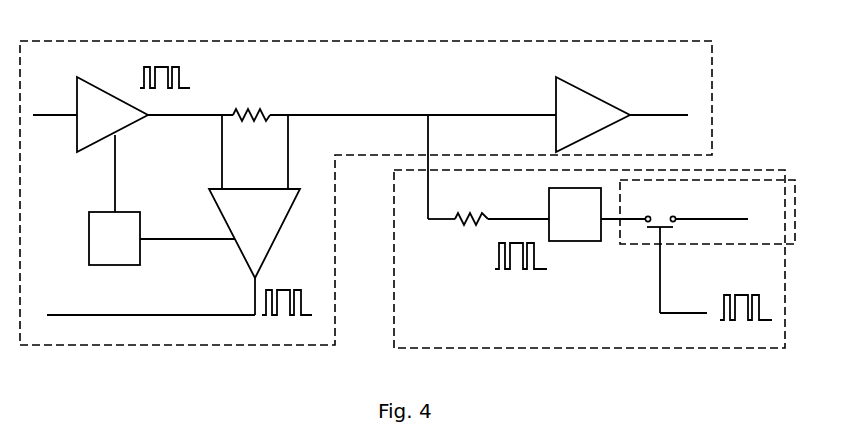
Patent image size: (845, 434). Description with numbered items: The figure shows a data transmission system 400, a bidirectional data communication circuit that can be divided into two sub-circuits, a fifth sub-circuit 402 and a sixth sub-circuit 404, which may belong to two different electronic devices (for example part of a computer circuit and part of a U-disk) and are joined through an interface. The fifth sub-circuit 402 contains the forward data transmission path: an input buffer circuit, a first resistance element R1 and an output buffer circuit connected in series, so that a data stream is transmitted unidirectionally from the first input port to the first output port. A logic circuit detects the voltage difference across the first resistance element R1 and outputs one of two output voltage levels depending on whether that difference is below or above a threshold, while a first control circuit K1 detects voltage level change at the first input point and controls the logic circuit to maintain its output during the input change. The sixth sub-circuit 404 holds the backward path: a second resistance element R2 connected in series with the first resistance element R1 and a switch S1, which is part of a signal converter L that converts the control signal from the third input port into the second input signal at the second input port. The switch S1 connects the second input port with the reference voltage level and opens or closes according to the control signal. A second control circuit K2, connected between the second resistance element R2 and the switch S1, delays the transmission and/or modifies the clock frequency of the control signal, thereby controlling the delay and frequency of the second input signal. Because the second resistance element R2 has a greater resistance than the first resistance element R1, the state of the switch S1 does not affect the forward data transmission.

The data transmission system 400 is at (805, 31).
The fifth sub-circuit 402 is at (693, 66).
The sixth sub-circuit 404 is at (441, 338).
The signal converter L is at (737, 178).
The first control circuit K1 is at (162, 200).
The second control circuit K2 is at (575, 214).
The first resistance element R1 is at (251, 103).
The second resistance element R2 is at (471, 209).
The switch S1 is at (676, 253).